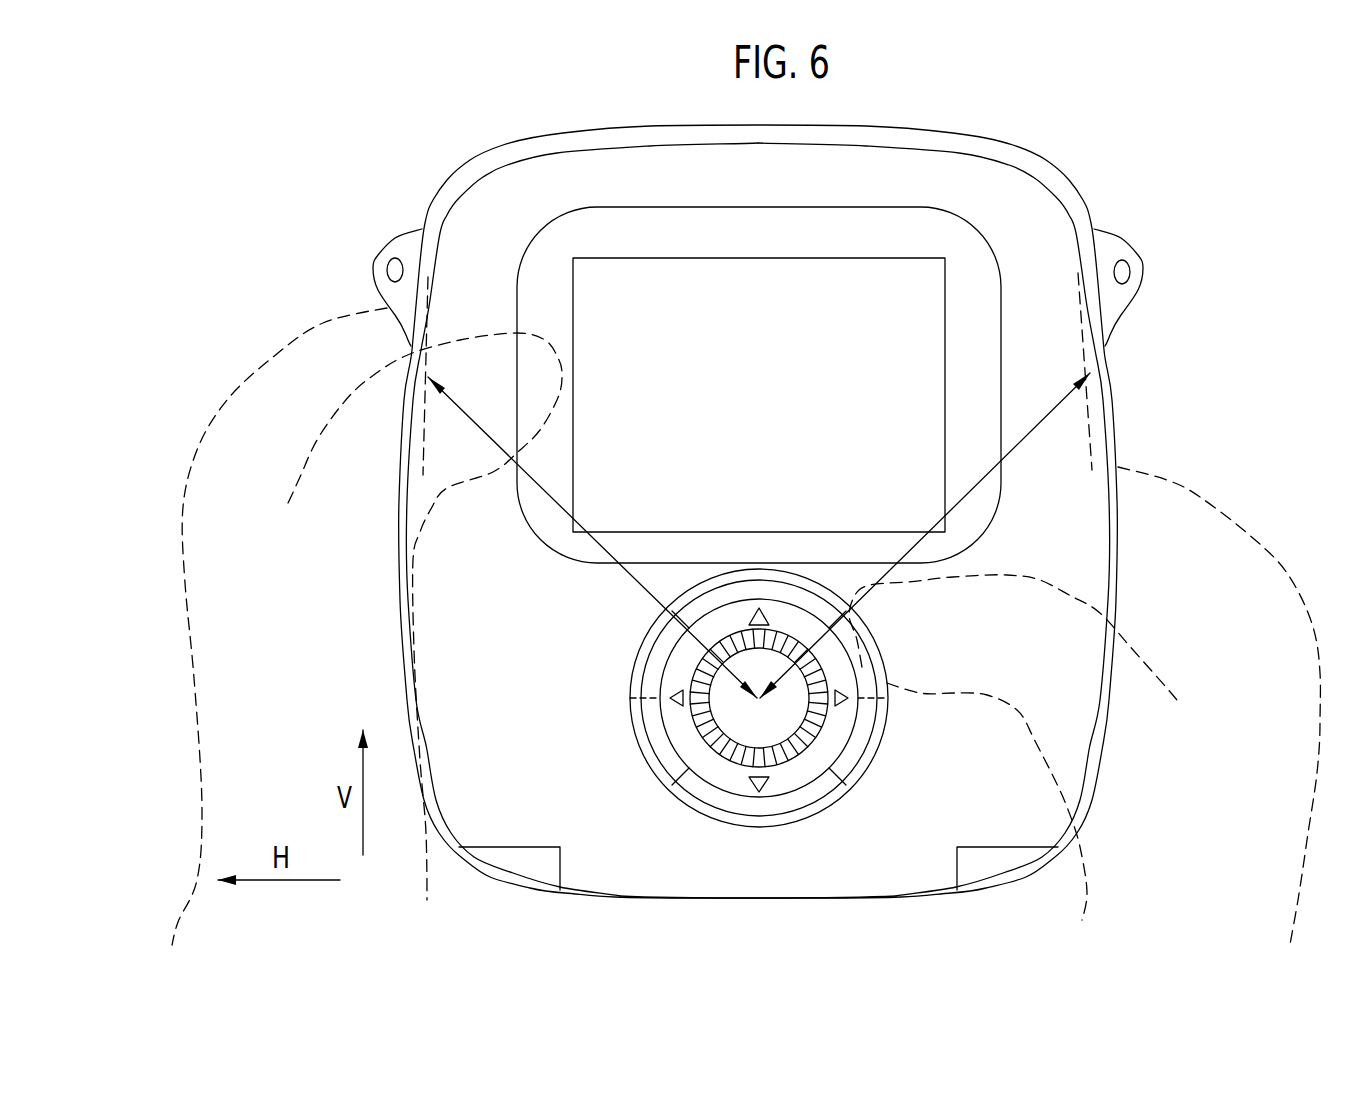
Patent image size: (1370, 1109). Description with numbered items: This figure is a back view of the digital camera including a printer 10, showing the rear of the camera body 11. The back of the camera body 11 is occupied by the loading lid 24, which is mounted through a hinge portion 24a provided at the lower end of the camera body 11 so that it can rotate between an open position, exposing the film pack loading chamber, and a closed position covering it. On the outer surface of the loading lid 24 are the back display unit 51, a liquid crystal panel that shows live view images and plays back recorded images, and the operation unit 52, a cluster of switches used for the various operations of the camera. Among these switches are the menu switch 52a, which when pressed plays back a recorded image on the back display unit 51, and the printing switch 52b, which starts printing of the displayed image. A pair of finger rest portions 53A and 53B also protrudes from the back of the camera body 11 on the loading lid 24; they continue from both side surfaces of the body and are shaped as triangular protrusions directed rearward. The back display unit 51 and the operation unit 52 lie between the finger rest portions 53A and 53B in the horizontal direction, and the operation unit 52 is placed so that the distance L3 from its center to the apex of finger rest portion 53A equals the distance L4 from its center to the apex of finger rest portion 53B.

The digital camera including a printer 10 is at (1213, 222).
The camera body 11 is at (478, 173).
The loading lid 24 is at (505, 226).
The hinge portion 24a is at (843, 887).
The back display unit 51 is at (727, 288).
The operation unit 52 is at (705, 815).
The menu switch 52a is at (725, 696).
The printing switch 52b is at (857, 760).
The finger rest portion 53A is at (424, 416).
The finger rest portion 53B is at (1092, 393).
The distance L3 is at (592, 537).
The distance L4 is at (925, 535).